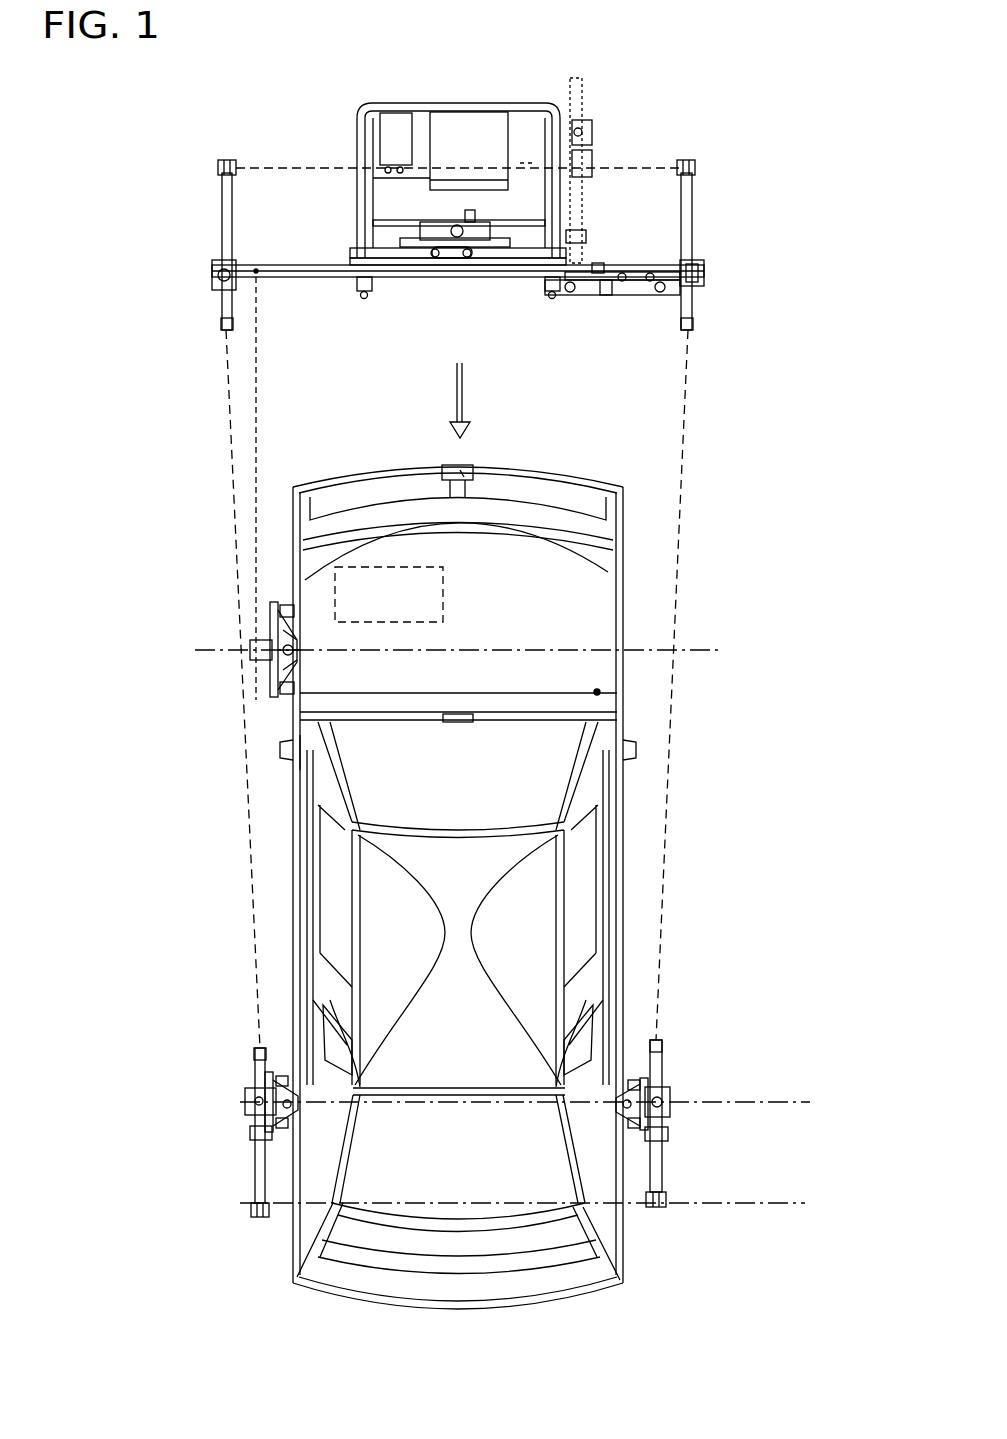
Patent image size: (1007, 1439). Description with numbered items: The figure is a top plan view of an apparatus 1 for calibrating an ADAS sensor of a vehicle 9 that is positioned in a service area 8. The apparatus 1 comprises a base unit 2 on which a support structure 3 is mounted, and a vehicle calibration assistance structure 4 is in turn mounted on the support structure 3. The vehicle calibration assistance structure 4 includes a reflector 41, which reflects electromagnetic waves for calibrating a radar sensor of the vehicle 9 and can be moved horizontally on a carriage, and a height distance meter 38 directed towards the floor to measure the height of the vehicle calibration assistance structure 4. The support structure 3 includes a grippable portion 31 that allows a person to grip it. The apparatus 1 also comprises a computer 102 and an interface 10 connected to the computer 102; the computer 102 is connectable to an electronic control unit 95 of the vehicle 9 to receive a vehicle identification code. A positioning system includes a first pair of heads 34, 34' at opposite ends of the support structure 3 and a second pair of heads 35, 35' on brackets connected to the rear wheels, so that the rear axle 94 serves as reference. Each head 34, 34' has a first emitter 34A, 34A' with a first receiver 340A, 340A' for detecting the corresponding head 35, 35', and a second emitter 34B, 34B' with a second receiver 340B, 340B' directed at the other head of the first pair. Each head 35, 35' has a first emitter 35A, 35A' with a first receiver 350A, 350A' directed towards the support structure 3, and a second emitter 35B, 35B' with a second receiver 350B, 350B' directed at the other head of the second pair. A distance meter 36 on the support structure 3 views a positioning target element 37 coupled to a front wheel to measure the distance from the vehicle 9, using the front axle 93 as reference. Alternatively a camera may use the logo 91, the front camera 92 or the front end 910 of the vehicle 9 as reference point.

The apparatus 1 is at (150, 282).
The base unit 2 is at (396, 278).
The support structure 3 is at (600, 148).
The vehicle calibration assistance structure 4 is at (355, 258).
The service area 8 is at (750, 735).
The vehicle 9 is at (514, 928).
The interface 10 is at (490, 130).
The grippable portion 31 is at (446, 105).
The head of first pair of heads 34 is at (205, 258).
The head of first pair of heads 34' is at (768, 235).
The first emitter 34A is at (176, 373).
The first receiver 340A is at (176, 373).
The second emitter 34B is at (240, 131).
The second receiver 340B is at (240, 131).
The first emitter 34A' is at (770, 360).
The first receiver 340A' is at (770, 360).
The second emitter 34B' is at (753, 121).
The second receiver 340B' is at (753, 121).
The head of second pair of heads 35 is at (211, 1152).
The head of second pair of heads 35' is at (721, 1134).
The first emitter 35A is at (195, 1009).
The first receiver 350A is at (195, 1009).
The second emitter 35B is at (237, 1274).
The second receiver 350B is at (237, 1274).
The first emitter 35A' is at (738, 1012).
The first receiver 350A' is at (738, 1012).
The second emitter 35B' is at (705, 1243).
The second receiver 350B' is at (705, 1243).
The distance meter 36 is at (252, 281).
The positioning target element 37 is at (250, 690).
The height distance meter 38 is at (600, 270).
The reflector 41 is at (628, 298).
The logo 91 is at (523, 455).
The front end 910 is at (468, 464).
The front camera 92 is at (470, 712).
The front axle 93 is at (200, 650).
The rear axle 94 is at (774, 1213).
The electronic control unit 95 is at (355, 583).
The computer 102 is at (396, 130).